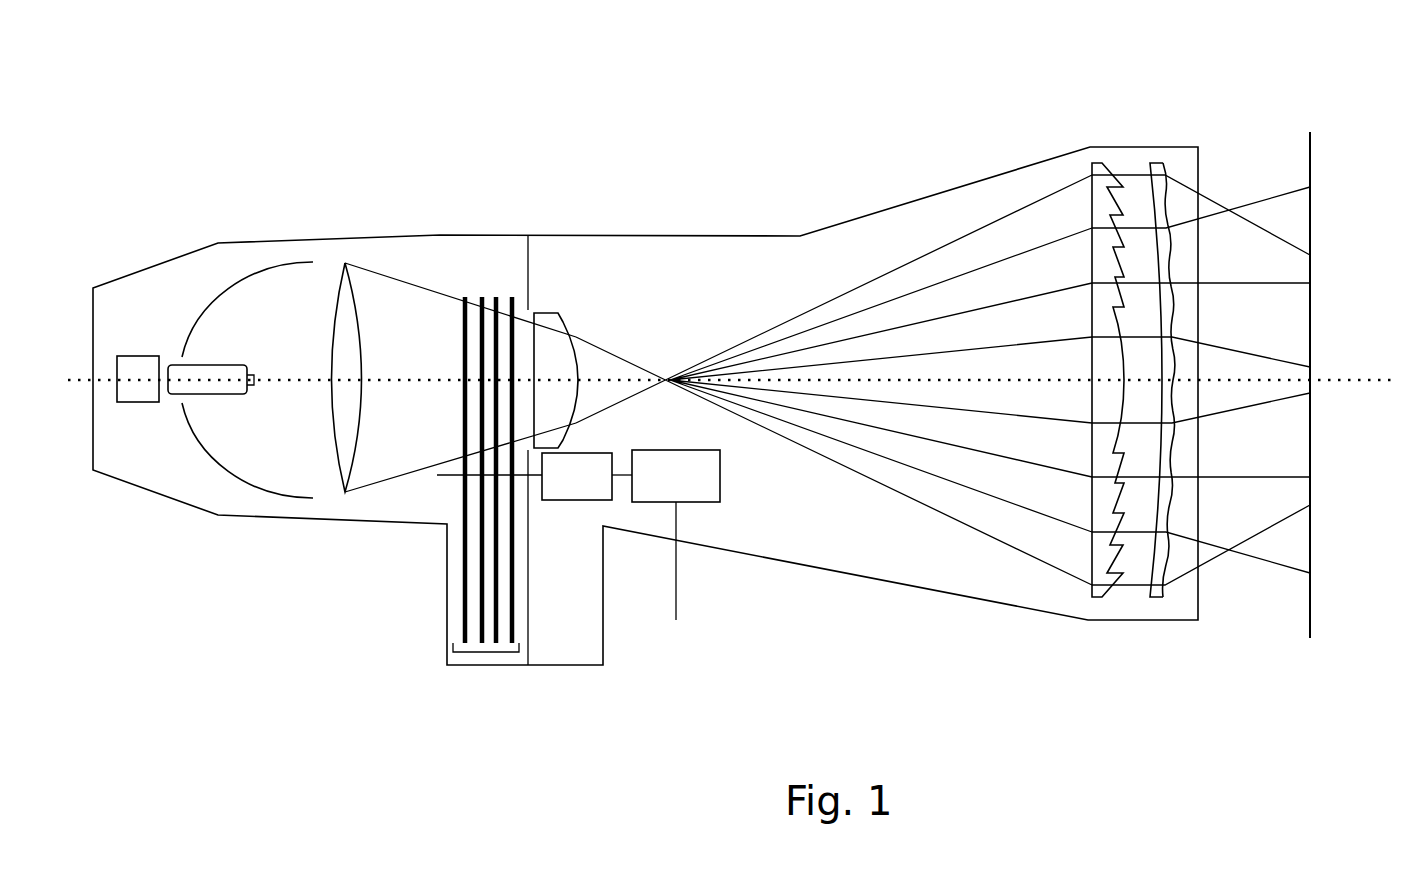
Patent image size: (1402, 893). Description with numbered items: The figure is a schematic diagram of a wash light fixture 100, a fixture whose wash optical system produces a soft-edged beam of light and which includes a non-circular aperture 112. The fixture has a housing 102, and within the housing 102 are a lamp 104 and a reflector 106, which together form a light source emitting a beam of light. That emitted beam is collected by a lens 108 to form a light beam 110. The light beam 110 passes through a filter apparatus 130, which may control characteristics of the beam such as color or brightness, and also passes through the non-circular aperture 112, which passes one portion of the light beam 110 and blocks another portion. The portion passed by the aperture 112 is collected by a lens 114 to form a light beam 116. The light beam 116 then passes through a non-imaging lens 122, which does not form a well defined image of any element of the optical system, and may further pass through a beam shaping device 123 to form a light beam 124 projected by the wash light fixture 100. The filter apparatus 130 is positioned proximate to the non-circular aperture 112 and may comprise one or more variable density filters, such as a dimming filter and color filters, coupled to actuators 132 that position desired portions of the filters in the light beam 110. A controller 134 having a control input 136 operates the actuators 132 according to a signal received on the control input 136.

The wash light fixture 100 is at (792, 80).
The housing 102 is at (572, 235).
The lamp 104 is at (180, 357).
The reflector 106 is at (235, 298).
The lens 108 is at (347, 263).
The light beam 110 is at (370, 487).
The non-circular aperture 112 is at (527, 347).
The lens 114 is at (548, 312).
The light beam 116 is at (608, 343).
The non-imaging lens 122 is at (1100, 162).
The beam shaping device 123 is at (1152, 162).
The light beam 124 is at (1255, 187).
The filter apparatus 130 is at (485, 652).
The actuators 132 is at (590, 453).
The controller 134 is at (722, 477).
The control input 136 is at (678, 583).